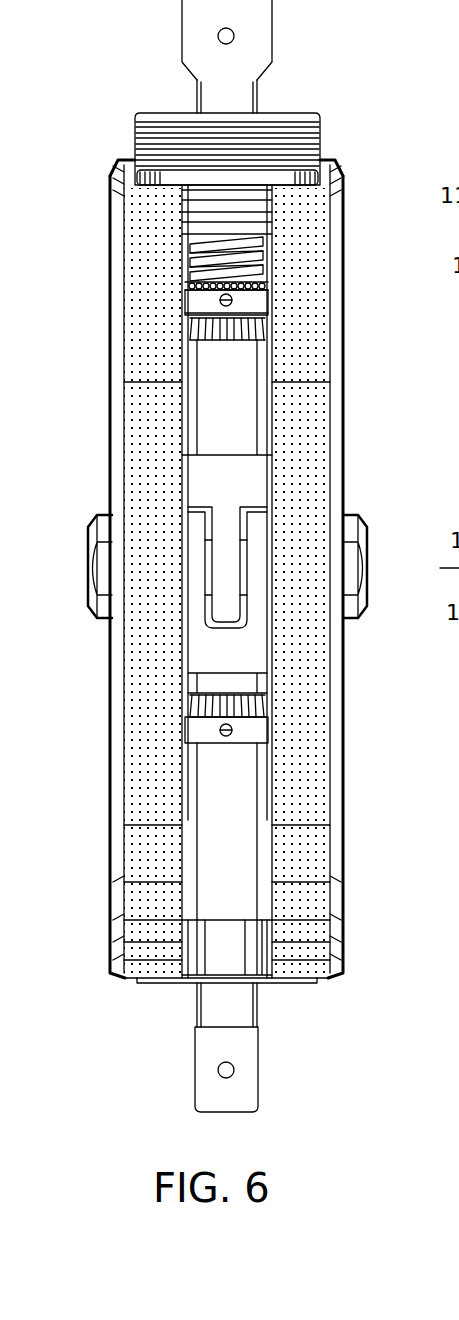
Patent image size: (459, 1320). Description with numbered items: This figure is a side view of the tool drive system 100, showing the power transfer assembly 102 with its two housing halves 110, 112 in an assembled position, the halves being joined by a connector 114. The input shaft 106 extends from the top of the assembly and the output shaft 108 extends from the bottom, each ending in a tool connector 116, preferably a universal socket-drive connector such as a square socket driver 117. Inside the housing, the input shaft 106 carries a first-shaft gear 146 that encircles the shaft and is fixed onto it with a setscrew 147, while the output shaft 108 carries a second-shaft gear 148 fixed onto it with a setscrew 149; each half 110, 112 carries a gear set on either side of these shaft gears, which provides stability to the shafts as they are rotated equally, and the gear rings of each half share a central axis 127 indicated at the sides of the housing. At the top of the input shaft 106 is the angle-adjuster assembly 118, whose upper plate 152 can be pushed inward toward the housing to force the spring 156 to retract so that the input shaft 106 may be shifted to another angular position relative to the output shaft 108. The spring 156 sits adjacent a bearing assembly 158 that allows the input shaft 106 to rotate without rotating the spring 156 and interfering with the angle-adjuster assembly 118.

The tool drive system 100 is at (128, 1014).
The power transfer assembly 102 is at (102, 835).
The input shaft 106 is at (197, 98).
The output shaft 108 is at (228, 848).
The half 110 is at (343, 265).
The half 112 is at (116, 426).
The connector 114 is at (347, 515).
The tool connector 116 is at (182, 30).
The square socket driver 117 is at (272, 34).
The angle-adjuster assembly 118 is at (125, 131).
The central axis 127 is at (88, 568).
The first-shaft gear 146 is at (192, 330).
The setscrew 147 is at (190, 302).
The second-shaft gear 148 is at (190, 705).
The setscrew 149 is at (221, 731).
The upper plate 152 is at (292, 112).
The spring 156 is at (200, 250).
The bearing assembly 158 is at (190, 287).